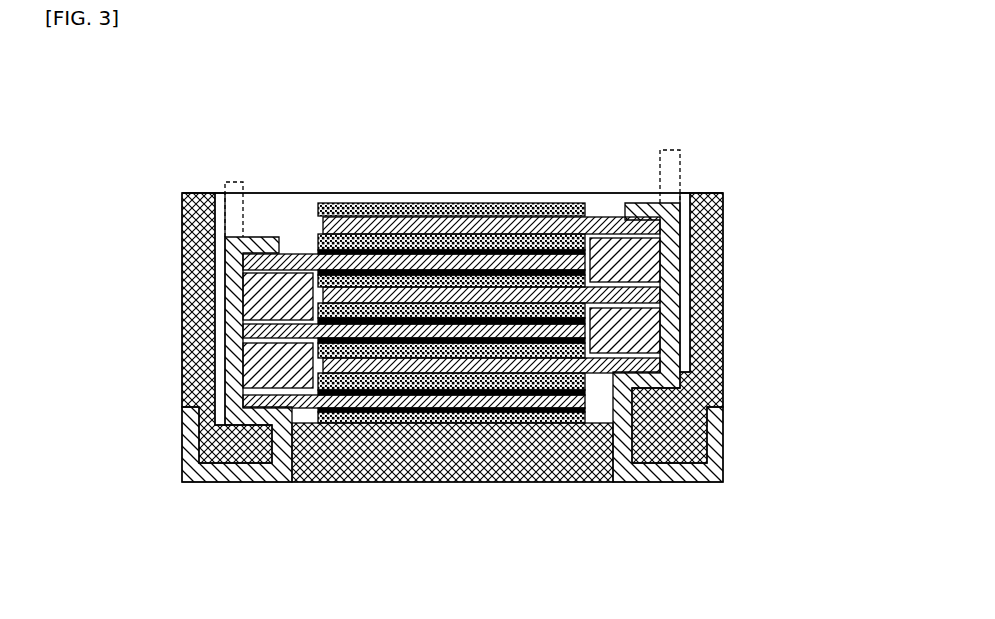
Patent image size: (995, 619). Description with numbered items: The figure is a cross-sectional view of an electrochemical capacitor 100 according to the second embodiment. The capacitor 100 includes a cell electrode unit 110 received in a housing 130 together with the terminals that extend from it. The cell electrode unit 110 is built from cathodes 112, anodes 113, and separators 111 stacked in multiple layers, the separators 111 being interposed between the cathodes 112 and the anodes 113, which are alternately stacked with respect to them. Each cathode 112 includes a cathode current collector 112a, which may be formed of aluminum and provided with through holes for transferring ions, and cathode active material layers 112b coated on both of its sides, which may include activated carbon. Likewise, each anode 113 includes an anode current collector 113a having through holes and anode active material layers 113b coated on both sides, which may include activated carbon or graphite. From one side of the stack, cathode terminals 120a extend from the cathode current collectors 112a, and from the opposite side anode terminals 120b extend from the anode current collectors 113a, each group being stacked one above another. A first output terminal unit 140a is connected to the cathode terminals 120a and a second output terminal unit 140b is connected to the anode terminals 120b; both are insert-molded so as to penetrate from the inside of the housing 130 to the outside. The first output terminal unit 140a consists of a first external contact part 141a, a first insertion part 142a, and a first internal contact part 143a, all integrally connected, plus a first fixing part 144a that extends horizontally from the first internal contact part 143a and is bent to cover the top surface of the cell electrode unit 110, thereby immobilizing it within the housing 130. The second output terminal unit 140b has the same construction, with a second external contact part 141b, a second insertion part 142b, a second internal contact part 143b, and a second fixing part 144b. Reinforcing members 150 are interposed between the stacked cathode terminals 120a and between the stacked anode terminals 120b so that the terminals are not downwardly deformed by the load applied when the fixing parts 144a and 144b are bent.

The electrochemical capacitor 100 is at (93, 70).
The cell electrode unit 110 is at (538, 190).
The separators 111 is at (498, 200).
The cathodes 112 is at (414, 492).
The cathode current collectors 112a is at (380, 413).
The cathode active material layers 112b is at (452, 414).
The anodes 113 is at (484, 160).
The anode current collectors 113a is at (348, 203).
The anode active material layers 113b is at (308, 131).
The cathode terminals 120a is at (248, 272).
The anode terminals 120b is at (660, 246).
The housing 130 is at (517, 470).
The first output terminal unit 140a is at (195, 343).
The second output terminal unit 140b is at (711, 329).
The first external contact part 141a is at (232, 472).
The second external contact part 141b is at (665, 470).
The first insertion part 142a is at (297, 440).
The second insertion part 142b is at (612, 462).
The first internal contact part 143a is at (232, 320).
The second internal contact part 143b is at (672, 317).
The first fixing part 144a is at (255, 245).
The second fixing part 144b is at (631, 193).
The reinforcing members 150 is at (262, 372).